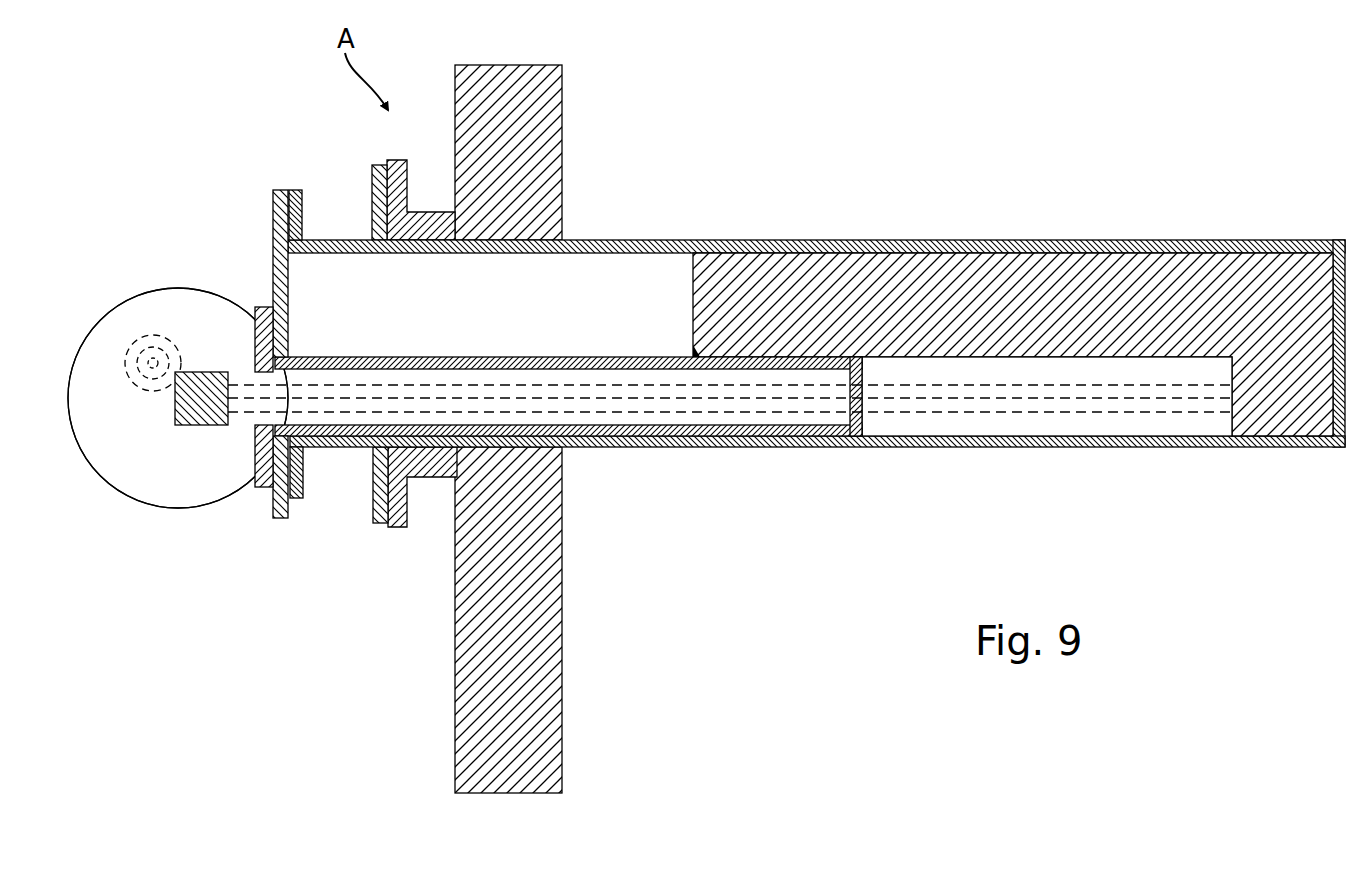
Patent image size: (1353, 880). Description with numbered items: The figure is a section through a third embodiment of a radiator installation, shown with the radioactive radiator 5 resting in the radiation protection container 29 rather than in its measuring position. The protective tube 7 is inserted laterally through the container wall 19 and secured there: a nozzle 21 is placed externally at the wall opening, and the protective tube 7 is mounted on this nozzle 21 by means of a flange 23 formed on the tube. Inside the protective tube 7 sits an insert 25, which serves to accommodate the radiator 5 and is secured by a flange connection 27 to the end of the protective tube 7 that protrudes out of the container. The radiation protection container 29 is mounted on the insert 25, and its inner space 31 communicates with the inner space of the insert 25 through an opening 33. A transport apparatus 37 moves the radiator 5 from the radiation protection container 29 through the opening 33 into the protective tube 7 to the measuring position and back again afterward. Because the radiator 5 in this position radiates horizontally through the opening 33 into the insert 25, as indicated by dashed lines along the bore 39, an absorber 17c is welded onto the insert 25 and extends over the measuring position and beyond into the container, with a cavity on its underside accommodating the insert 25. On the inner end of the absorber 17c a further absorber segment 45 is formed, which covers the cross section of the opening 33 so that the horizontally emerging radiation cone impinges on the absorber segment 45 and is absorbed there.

The radioactive radiator 5 is at (188, 410).
The protective tube 7 is at (733, 245).
The absorber 17c is at (1283, 280).
The container wall 19 is at (488, 683).
The nozzle 21 is at (432, 462).
The flange 23 is at (372, 497).
The insert 25 is at (592, 357).
The flange connection 27 is at (283, 518).
The radiation protection container 29 is at (85, 462).
The inner space 31 is at (105, 342).
The opening 33 is at (253, 368).
The transport apparatus 37 is at (145, 335).
The shaft bore 39 is at (348, 400).
The absorber segment 45 is at (1295, 403).